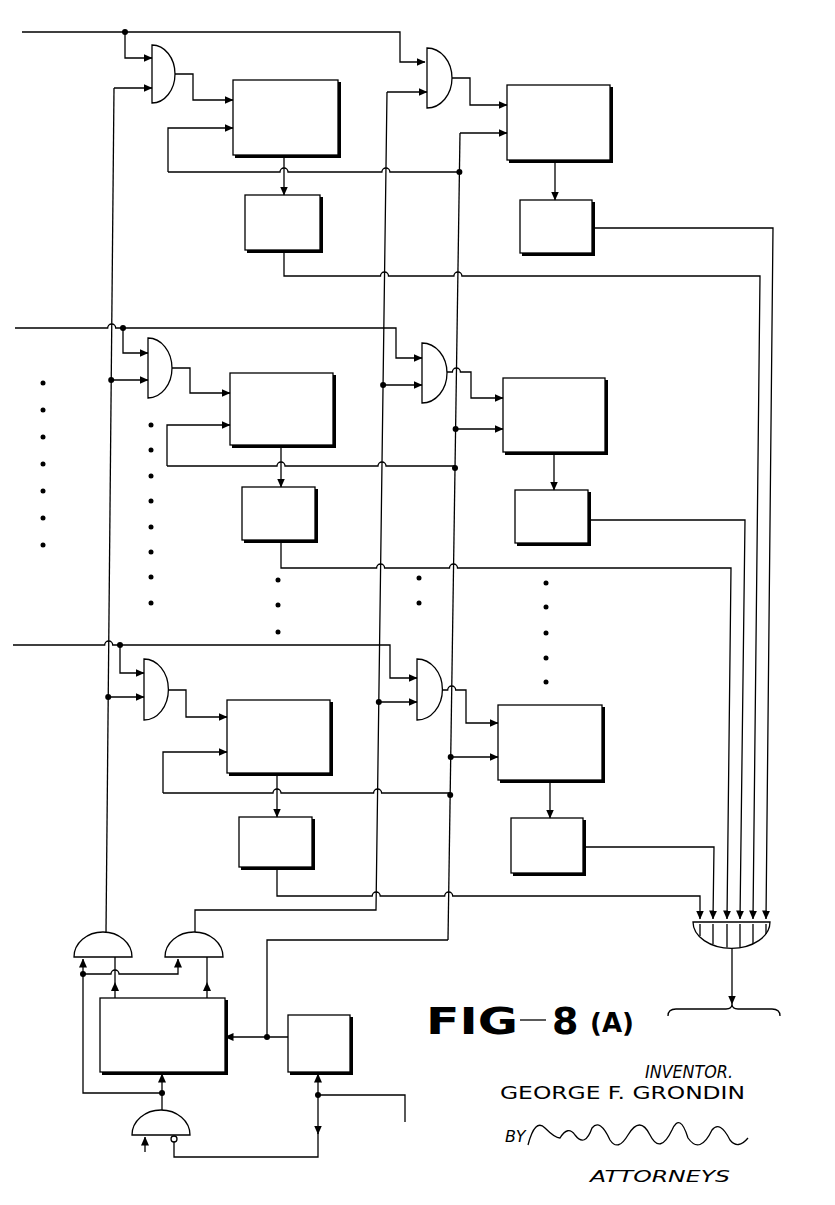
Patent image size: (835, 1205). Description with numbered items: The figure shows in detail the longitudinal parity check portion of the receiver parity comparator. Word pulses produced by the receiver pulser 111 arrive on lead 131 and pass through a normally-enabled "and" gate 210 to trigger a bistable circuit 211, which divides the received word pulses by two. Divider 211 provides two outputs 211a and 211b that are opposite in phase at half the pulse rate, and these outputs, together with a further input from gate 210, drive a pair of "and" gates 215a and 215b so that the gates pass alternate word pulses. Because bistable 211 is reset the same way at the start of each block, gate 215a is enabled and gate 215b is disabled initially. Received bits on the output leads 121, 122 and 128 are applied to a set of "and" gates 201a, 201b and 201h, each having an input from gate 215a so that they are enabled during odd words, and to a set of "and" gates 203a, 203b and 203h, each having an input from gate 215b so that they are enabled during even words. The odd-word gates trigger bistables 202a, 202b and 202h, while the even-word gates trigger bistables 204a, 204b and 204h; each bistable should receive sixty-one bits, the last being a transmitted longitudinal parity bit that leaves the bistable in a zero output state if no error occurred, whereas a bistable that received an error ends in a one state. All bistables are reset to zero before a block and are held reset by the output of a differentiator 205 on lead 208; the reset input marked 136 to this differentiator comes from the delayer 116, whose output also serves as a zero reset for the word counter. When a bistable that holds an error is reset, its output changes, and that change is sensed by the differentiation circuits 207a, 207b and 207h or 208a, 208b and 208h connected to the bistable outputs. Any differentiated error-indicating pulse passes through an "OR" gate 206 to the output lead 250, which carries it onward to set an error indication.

The output lead 121 is at (74, 30).
The output lead 122 is at (75, 326).
The output lead 128 is at (72, 643).
The "and" gate 201a is at (176, 70).
The "and" gate 201b is at (173, 365).
The "and" gate 201h is at (170, 684).
The bistable circuit 202a is at (262, 146).
The bistable circuit 202b is at (258, 438).
The bistable circuit 202h is at (255, 765).
The "and" gate 203a is at (455, 66).
The "and" gate 203b is at (444, 346).
The "and" gate 203h is at (436, 661).
The bistable circuit 204a is at (535, 151).
The bistable circuit 204b is at (531, 443).
The bistable circuit 204h is at (527, 771).
The differentiation circuit 207a is at (262, 245).
The differentiation circuit 207b is at (258, 536).
The differentiation circuit 207h is at (255, 864).
The differentiation circuit 208a is at (536, 249).
The differentiation circuit 208b is at (531, 539).
The differentiation circuit 208h is at (527, 868).
The differentiator 205 is at (301, 1064).
The OR gate 206 is at (703, 936).
The lead 208 is at (449, 924).
The "and" gate 210 is at (188, 1122).
The bistable circuit 211 is at (145, 1065).
The output 211a is at (118, 993).
The output 211b is at (207, 977).
The "and" gate 215a is at (78, 942).
The "and" gate 215b is at (170, 942).
The output lead 250 is at (731, 977).
The lead 131 is at (143, 1148).
The lead 136 is at (365, 1094).
The receiver pulser 111 is at (212, 1187).
The delayer 116 is at (472, 1160).